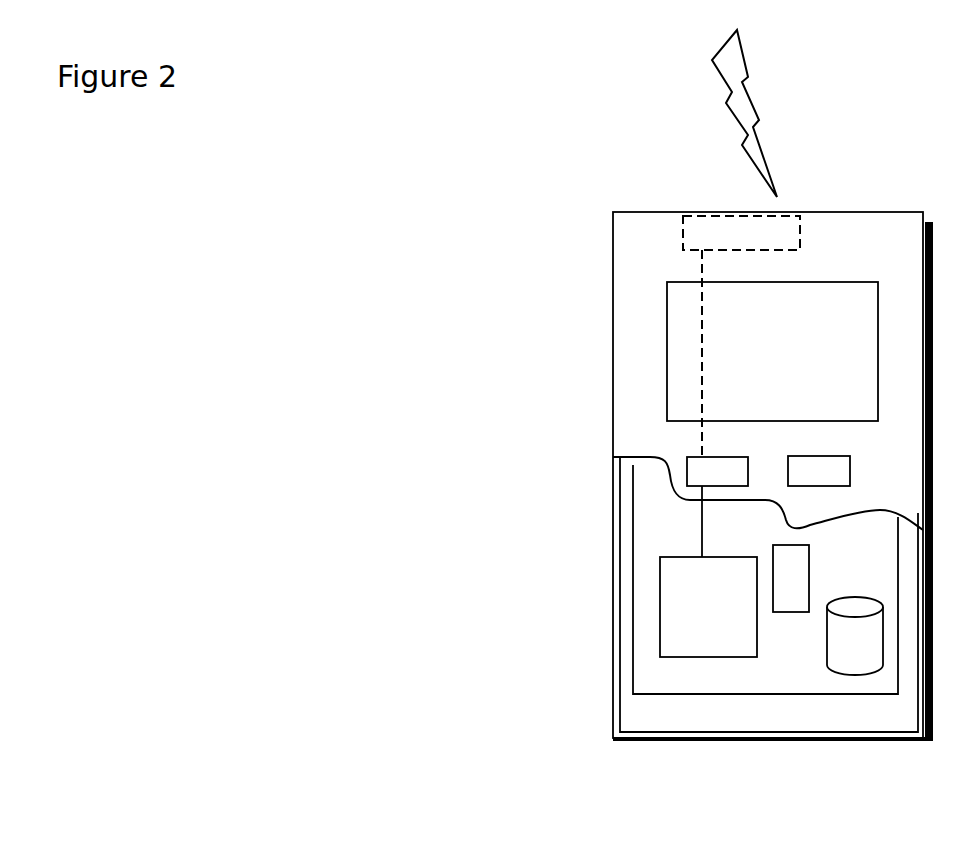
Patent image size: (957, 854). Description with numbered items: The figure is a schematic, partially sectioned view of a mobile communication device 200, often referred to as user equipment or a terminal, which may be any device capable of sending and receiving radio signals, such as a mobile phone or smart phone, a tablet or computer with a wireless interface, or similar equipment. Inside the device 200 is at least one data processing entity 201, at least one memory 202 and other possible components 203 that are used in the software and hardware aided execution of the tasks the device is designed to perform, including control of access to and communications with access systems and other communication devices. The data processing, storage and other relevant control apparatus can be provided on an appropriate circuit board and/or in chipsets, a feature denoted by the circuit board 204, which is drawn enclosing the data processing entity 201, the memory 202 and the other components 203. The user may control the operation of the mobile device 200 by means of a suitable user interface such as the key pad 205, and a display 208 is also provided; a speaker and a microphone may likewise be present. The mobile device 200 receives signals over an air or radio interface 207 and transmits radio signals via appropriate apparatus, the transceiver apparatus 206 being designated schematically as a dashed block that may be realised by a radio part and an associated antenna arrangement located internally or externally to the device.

The communication device 200 is at (613, 255).
The data processing entity 201 is at (667, 590).
The memory 202 is at (848, 648).
The other possible components 203 is at (790, 562).
The circuit board 204 is at (658, 677).
The key pad 205 is at (692, 472).
The transceiver apparatus 206 is at (788, 227).
The air or radio interface 207 is at (782, 131).
The display 208 is at (683, 338).